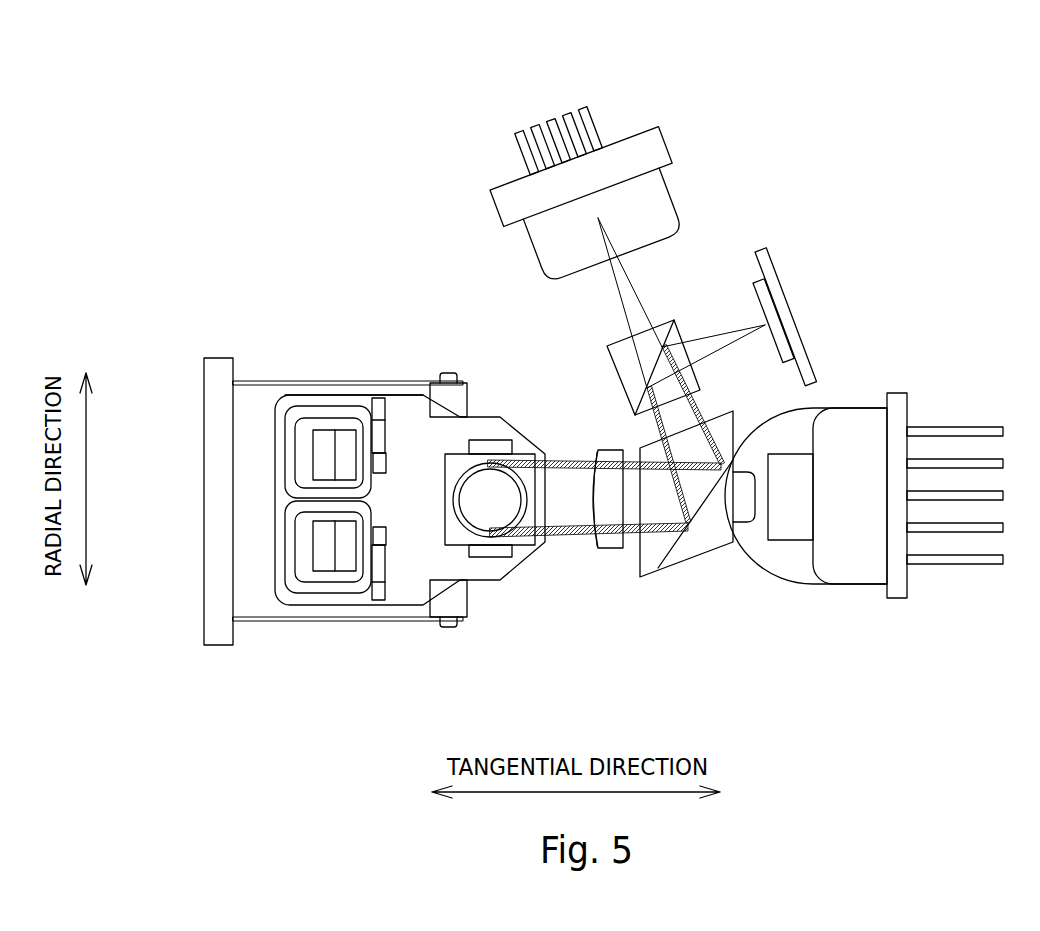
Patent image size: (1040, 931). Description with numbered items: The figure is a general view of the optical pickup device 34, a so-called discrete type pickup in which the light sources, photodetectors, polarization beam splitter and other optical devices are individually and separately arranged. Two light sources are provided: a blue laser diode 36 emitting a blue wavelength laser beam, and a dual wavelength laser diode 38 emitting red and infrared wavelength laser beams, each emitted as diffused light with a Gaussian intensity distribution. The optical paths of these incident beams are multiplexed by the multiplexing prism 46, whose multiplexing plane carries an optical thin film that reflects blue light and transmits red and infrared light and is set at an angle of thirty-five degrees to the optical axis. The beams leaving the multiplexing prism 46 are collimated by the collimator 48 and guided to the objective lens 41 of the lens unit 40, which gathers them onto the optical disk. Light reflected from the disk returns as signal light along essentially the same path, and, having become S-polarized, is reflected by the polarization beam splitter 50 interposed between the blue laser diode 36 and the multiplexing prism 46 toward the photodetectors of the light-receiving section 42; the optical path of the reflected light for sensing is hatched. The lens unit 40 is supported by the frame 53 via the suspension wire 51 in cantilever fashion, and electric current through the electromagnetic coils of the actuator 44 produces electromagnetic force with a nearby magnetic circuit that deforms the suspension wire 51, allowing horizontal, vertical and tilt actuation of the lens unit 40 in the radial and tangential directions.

The optical pickup device 34 is at (739, 350).
The blue laser diode 36 is at (667, 197).
The dual wavelength laser diode 38 is at (850, 573).
The lens unit 40 is at (507, 595).
The objective lens 41 is at (488, 490).
The light-receiving section 42 is at (800, 325).
The actuator 44 is at (344, 612).
The multiplexing prism 46 is at (693, 550).
The collimator 48 is at (613, 548).
The polarization beam splitter 50 is at (608, 347).
The suspension wire 51 is at (340, 395).
The frame 53 is at (218, 567).